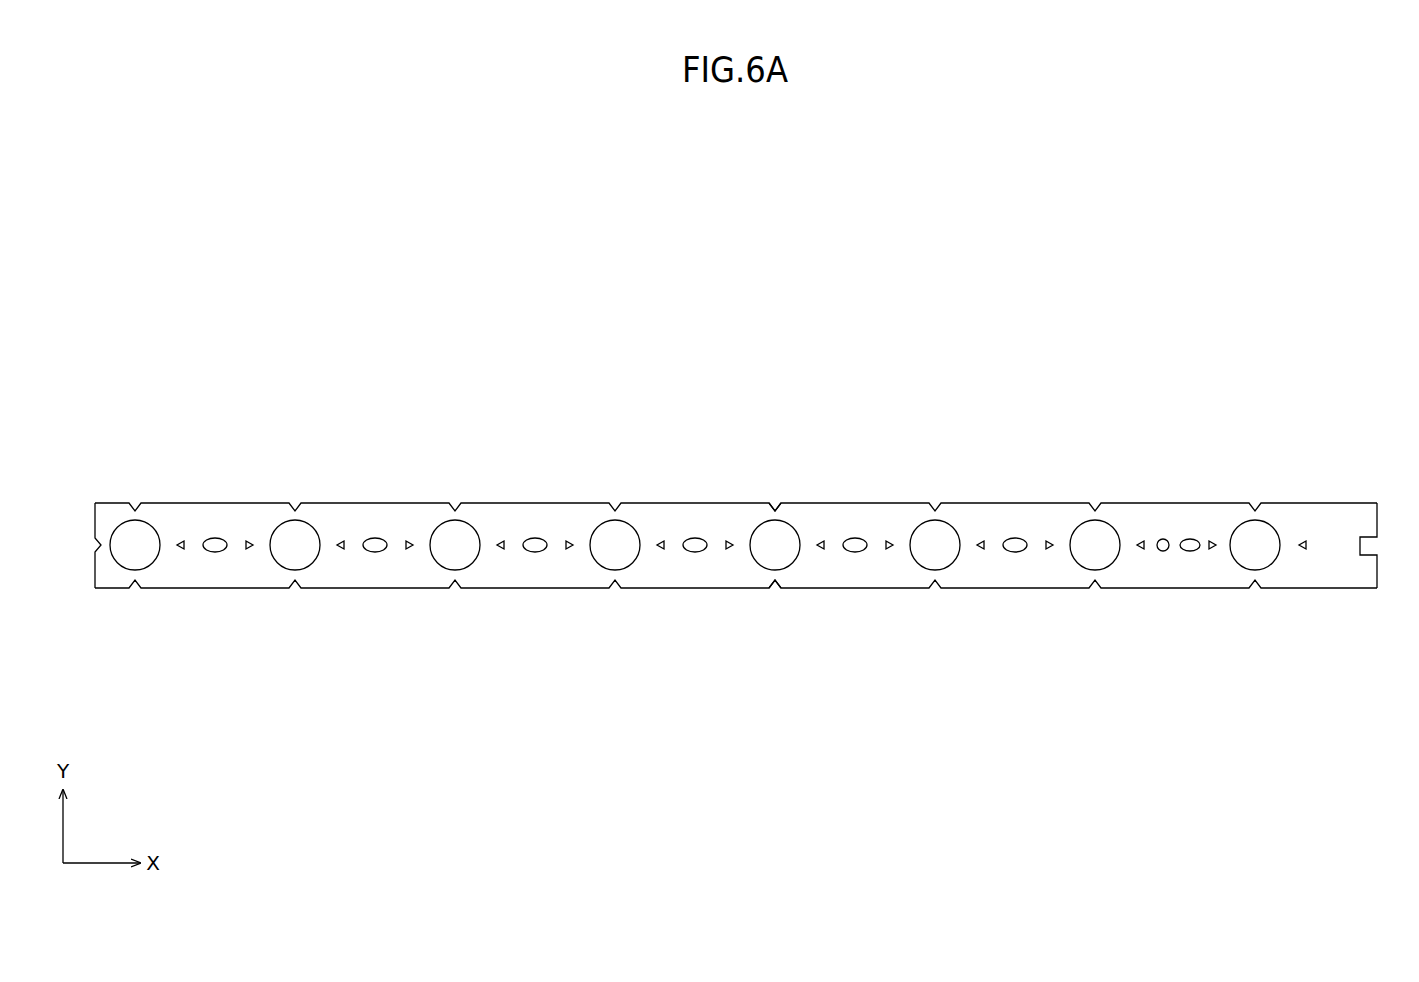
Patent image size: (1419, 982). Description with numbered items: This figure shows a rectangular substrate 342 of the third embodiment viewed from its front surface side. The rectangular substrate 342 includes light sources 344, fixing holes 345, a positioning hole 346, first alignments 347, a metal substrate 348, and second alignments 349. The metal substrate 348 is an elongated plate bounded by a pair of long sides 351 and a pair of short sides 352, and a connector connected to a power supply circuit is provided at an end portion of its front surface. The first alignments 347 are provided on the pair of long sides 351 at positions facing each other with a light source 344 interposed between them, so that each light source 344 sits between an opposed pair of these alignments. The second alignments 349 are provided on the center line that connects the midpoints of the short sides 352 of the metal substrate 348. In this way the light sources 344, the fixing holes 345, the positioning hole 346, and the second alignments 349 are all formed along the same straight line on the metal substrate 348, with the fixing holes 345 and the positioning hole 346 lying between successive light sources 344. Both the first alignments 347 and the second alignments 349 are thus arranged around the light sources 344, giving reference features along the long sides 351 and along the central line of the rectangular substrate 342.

The rectangular substrate 342 is at (734, 530).
The light source 344 is at (1097, 548).
The fixing hole 345 is at (859, 541).
The positioning hole 346 is at (1161, 540).
The first alignment 347 is at (776, 587).
The metal substrate 348 is at (674, 567).
The second alignment 349 is at (499, 551).
The long side 351 is at (980, 503).
The short side 352 is at (93, 528).